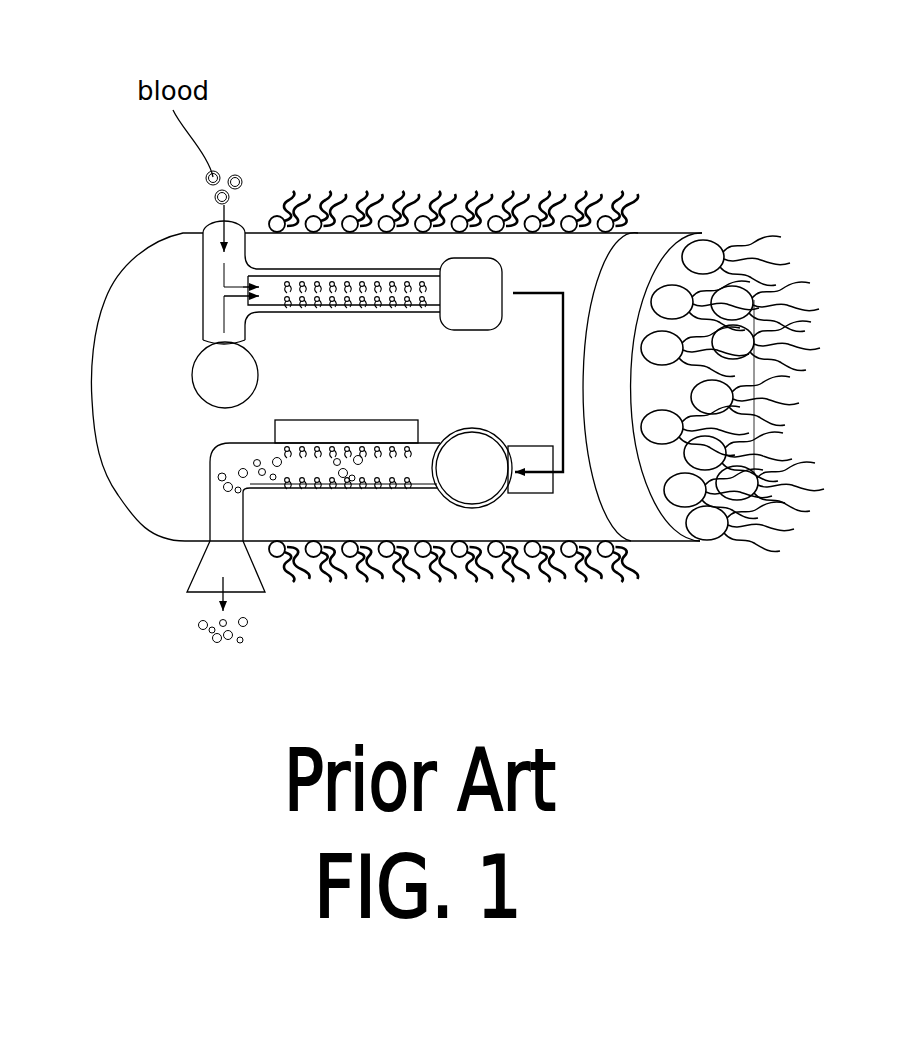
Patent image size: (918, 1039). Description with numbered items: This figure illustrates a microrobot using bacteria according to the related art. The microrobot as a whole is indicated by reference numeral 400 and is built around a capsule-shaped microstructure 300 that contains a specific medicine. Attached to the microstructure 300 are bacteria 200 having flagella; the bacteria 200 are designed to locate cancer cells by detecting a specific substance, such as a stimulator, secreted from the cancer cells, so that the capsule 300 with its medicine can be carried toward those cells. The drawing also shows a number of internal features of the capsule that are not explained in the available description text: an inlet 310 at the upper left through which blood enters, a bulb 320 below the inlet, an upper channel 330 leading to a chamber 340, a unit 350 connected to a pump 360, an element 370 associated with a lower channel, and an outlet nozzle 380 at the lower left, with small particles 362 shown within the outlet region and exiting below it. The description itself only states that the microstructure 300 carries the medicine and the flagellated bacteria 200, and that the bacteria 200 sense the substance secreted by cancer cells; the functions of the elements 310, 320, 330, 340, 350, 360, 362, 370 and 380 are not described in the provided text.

The blood circulation apparatus 400 is at (650, 112).
The capsule-shaped microstructure 300 is at (655, 231).
The bacteria 200 is at (385, 209).
The blood inlet 310 is at (213, 237).
The reservoir bulb 320 is at (217, 380).
The upper flow channel 330 is at (276, 285).
The connector chamber 340 is at (473, 273).
The control unit 350 is at (528, 485).
The pump 360 is at (475, 497).
The bubbles/particles 362 is at (247, 472).
The lower flow channel heater 370 is at (293, 430).
The outlet nozzle 380 is at (217, 557).